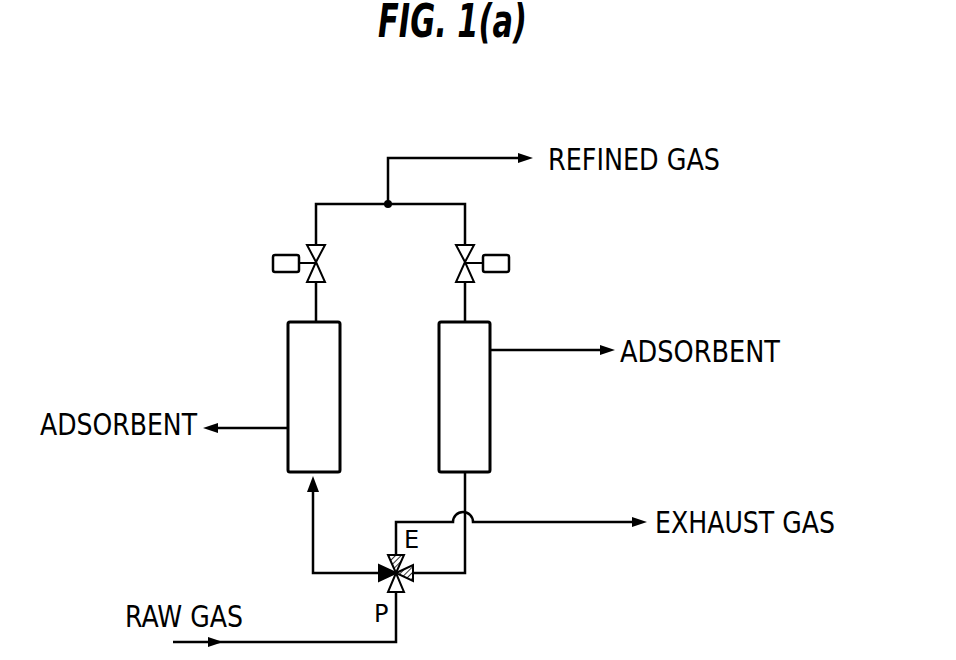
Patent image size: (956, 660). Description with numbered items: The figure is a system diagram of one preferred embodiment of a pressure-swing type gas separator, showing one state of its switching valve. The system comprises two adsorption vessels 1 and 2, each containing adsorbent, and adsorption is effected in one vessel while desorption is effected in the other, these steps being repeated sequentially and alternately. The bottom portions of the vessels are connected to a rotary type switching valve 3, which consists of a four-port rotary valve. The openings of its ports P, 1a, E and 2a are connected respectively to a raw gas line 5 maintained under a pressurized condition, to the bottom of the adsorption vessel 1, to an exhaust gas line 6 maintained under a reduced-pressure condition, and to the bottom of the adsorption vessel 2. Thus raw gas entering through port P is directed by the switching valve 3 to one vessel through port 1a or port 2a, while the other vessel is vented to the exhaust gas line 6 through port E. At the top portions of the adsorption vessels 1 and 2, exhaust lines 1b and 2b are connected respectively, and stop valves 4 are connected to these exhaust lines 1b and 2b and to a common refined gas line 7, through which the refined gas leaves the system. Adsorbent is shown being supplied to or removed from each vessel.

The adsorption vessel 1 is at (340, 400).
The adsorption vessel 2 is at (490, 400).
The rotary type switching valve 3 is at (412, 581).
The stop valve 4 is at (284, 255).
The raw gas line 5 is at (282, 642).
The exhaust gas line 6 is at (568, 521).
The refined gas line 7 is at (470, 157).
The port 1a is at (342, 524).
The exhaust line 1b is at (316, 303).
The port 2a is at (439, 522).
The exhaust line 2b is at (465, 303).